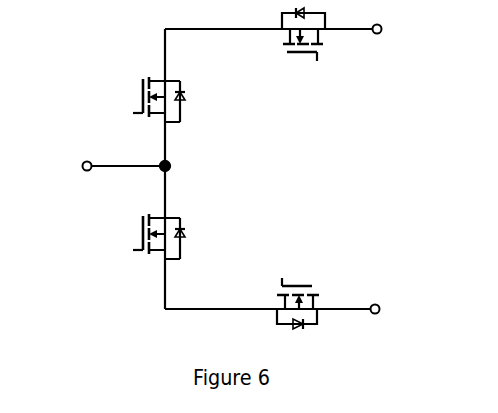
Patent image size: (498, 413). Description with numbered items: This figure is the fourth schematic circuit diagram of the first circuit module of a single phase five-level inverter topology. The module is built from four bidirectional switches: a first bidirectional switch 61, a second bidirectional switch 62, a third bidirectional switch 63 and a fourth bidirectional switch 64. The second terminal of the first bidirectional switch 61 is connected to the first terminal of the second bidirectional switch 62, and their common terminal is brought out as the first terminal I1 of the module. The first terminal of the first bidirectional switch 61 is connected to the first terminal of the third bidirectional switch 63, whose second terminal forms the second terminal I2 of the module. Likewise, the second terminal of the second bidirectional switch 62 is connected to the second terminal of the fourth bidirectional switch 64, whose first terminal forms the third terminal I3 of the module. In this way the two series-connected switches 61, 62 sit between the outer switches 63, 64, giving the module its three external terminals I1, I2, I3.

The first bidirectional switch 61 is at (135, 99).
The second bidirectional switch 62 is at (135, 236).
The third bidirectional switch 63 is at (306, 55).
The fourth bidirectional switch 64 is at (303, 284).
The first terminal of the first circuit module I1 is at (112, 166).
The second terminal of the first circuit module I2 is at (393, 33).
The third terminal of the first circuit module I3 is at (392, 313).